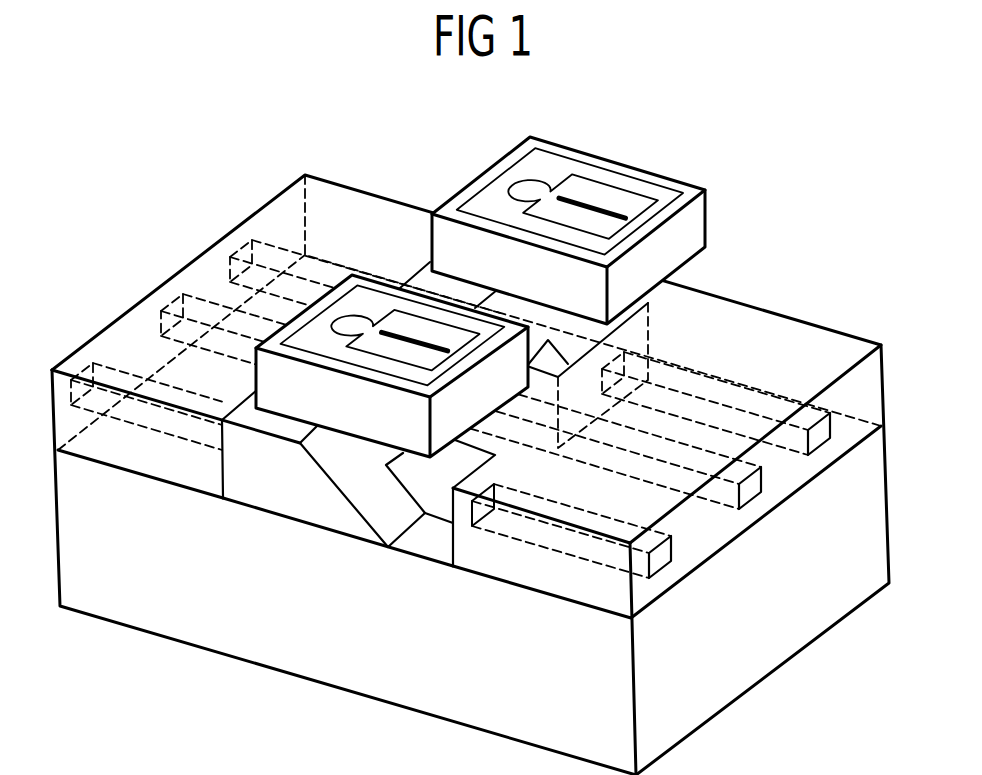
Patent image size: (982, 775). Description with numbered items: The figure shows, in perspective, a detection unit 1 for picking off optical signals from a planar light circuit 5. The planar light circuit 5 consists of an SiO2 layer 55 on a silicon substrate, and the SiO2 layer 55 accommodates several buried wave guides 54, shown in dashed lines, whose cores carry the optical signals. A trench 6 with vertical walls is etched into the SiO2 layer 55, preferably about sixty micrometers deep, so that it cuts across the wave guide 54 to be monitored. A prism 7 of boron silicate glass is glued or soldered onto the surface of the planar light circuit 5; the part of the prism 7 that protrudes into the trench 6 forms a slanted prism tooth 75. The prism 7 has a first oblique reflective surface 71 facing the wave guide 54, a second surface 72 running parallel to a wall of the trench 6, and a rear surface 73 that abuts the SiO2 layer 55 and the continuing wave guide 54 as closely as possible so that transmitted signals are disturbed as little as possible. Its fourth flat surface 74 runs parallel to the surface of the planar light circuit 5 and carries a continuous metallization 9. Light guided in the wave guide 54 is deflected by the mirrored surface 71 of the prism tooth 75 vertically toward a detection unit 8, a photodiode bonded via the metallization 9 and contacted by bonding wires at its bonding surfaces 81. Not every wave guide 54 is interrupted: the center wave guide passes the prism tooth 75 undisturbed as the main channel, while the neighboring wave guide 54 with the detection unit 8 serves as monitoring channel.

The detection unit 1 is at (255, 305).
The planar light circuit 5 is at (762, 280).
The SiO2 layer 55 is at (876, 387).
The wave guide 54 is at (664, 561).
The trench 6 is at (430, 550).
The prism 7 is at (268, 478).
The first oblique reflective surface 71 is at (380, 480).
The second surface 72 is at (268, 519).
The rear surface 73 is at (220, 464).
The fourth flat surface 74 is at (428, 265).
The prism tooth 75 is at (353, 540).
The detection unit 8 is at (495, 165).
The bonding surface 81 is at (612, 197).
The metallization 9 is at (413, 278).